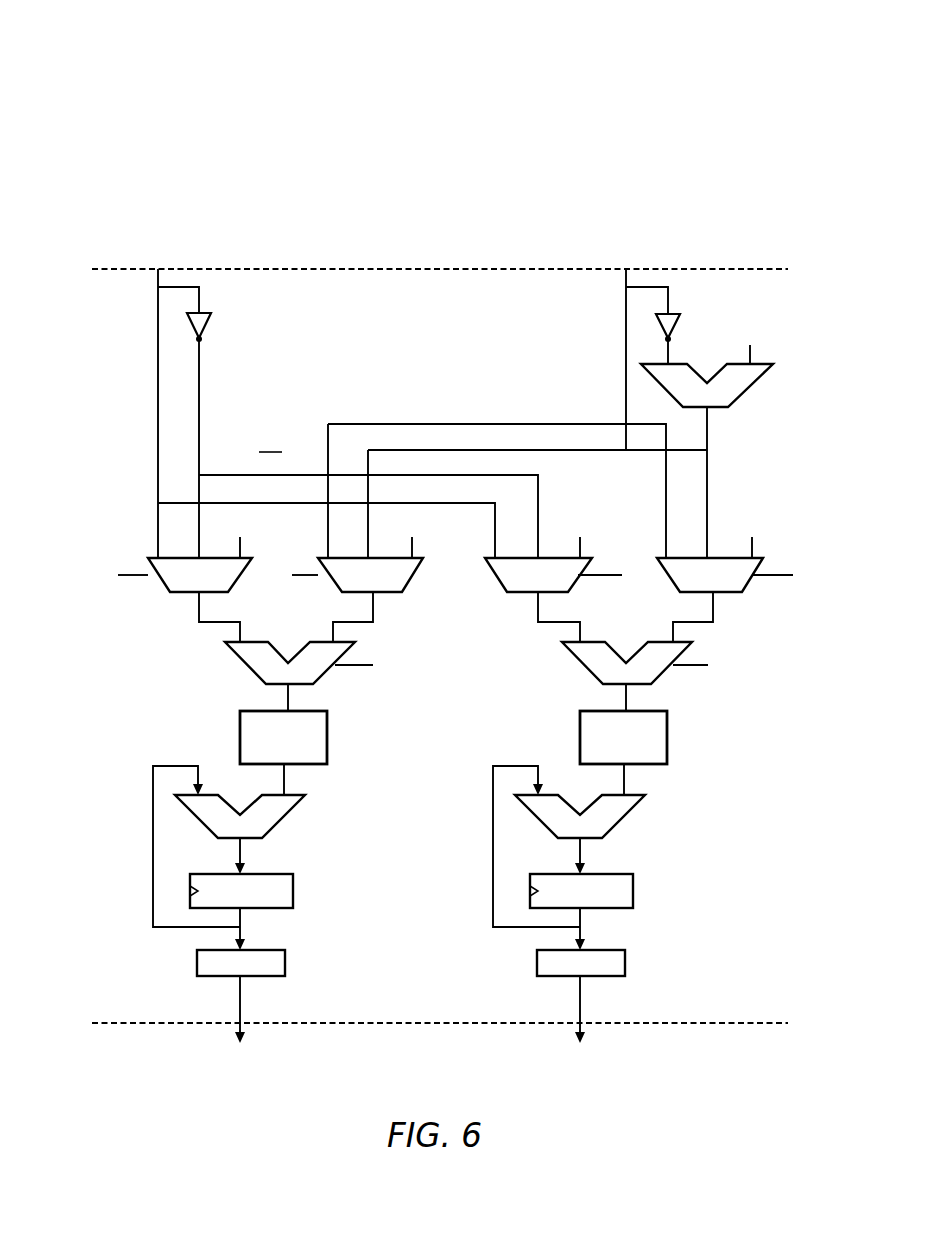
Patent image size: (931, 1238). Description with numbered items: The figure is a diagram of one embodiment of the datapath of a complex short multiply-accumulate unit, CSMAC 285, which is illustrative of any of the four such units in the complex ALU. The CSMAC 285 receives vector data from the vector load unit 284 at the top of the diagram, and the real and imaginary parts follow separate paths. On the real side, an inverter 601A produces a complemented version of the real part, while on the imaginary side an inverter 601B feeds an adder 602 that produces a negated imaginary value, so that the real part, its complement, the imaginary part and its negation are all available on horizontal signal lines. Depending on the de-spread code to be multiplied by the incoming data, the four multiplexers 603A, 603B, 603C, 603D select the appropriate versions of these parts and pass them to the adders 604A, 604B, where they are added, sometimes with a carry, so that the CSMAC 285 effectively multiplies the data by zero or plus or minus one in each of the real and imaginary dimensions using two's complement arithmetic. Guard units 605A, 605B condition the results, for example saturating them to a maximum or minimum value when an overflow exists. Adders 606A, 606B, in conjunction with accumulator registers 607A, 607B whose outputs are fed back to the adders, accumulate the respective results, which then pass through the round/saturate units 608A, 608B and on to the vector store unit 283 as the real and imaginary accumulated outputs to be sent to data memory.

The CSMAC 285 is at (182, 92).
The vector store unit 283 is at (440, 254).
The vector load unit 284 is at (440, 1039).
The inverter 601A is at (206, 322).
The inverter 601B is at (672, 320).
The adder 602 is at (740, 396).
The multiplexer 603A is at (182, 596).
The multiplexer 603B is at (383, 594).
The multiplexer 603C is at (527, 595).
The multiplexer 603D is at (727, 595).
The adder 604A is at (248, 667).
The adder 604B is at (586, 667).
The guard unit 605A is at (283, 737).
The guard unit 605B is at (623, 737).
The adder 606A is at (280, 820).
The adder 606B is at (620, 820).
The accumulator register 607A is at (267, 910).
The accumulator register 607B is at (607, 910).
The round/saturate unit 608A is at (282, 978).
The round/saturate unit 608B is at (622, 978).